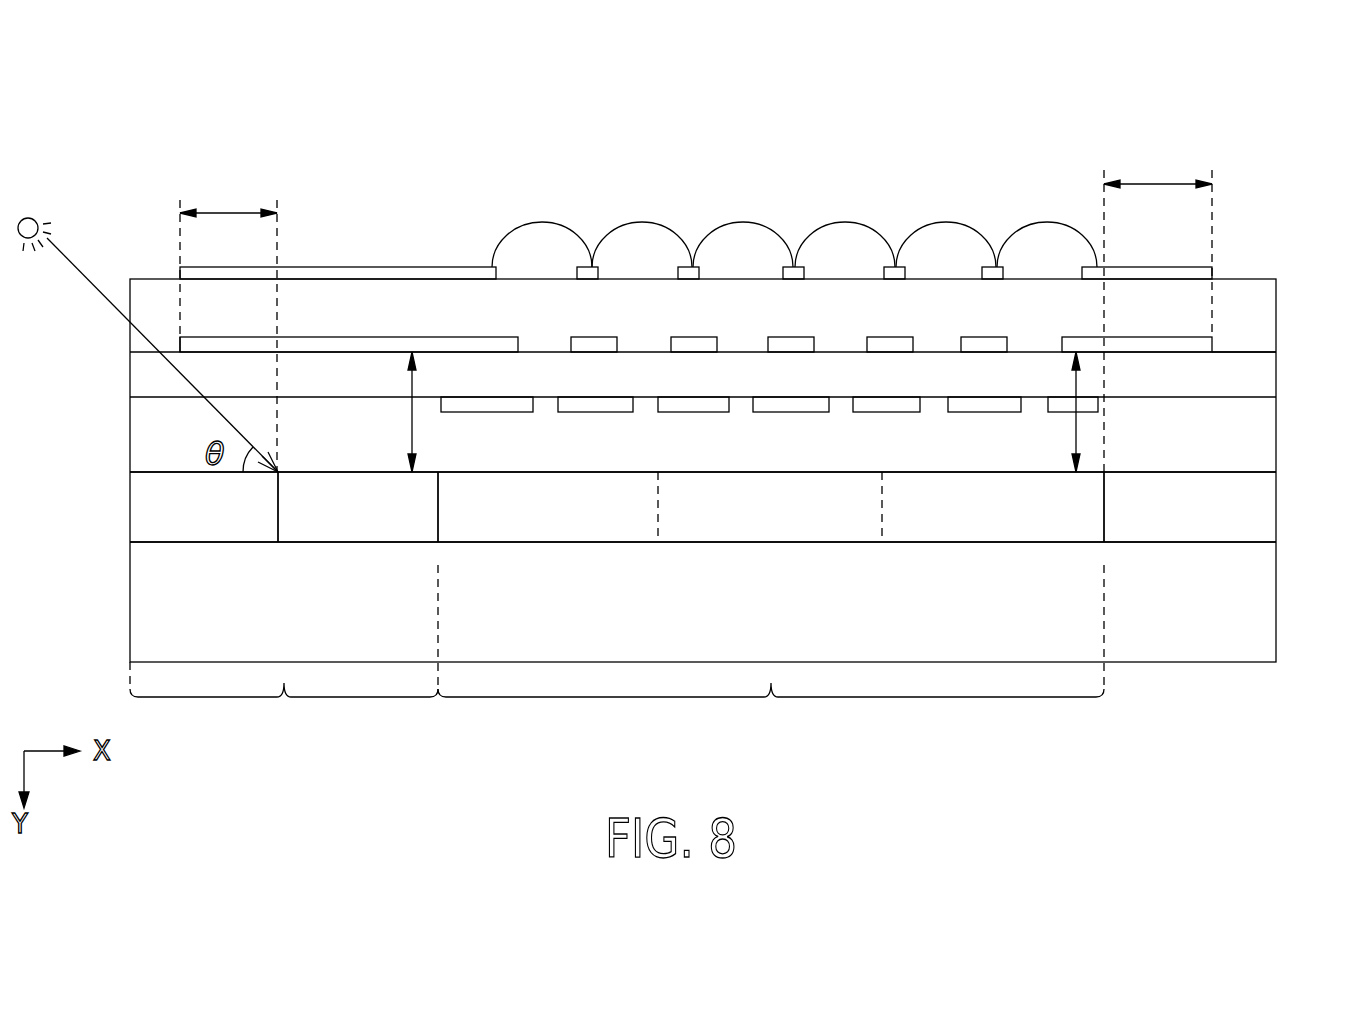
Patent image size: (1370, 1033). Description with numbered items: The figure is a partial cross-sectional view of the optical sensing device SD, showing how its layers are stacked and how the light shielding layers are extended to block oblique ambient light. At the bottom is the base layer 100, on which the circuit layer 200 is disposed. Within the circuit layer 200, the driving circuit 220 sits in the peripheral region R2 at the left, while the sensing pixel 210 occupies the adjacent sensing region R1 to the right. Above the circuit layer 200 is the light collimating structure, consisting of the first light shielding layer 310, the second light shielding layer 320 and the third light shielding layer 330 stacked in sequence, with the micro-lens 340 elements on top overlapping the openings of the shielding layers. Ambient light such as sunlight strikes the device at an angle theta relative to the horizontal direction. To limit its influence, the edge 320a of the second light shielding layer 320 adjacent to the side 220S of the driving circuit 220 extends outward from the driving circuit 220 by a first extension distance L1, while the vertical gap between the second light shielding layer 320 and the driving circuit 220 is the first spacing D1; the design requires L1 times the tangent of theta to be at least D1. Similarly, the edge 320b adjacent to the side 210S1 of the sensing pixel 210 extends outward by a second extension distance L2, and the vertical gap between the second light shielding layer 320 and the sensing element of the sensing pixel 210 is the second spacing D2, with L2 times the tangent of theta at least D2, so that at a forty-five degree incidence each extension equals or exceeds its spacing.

The optical sensing device SD is at (1180, 94).
The base layer 100 is at (1248, 607).
The circuit layer 200 is at (1248, 527).
The sensing pixel 210 is at (515, 513).
The driving circuit 220 is at (372, 513).
The side of the sensing pixel 210S1 is at (1104, 505).
The side of the driving circuit 220S is at (278, 505).
The first light shielding layer 310 is at (1090, 407).
The second light shielding layer 320 is at (1135, 340).
The edge of the second light shielding layer 320a is at (180, 343).
The edge of the second light shielding layer 320b is at (1212, 343).
The third light shielding layer 330 is at (1138, 268).
The micro-lens 340 is at (942, 238).
The first extension distance L1 is at (228, 326).
The second extension distance L2 is at (1158, 312).
The first spacing D1 is at (393, 412).
The second spacing D2 is at (1058, 412).
The sensing region R1 is at (771, 653).
The peripheral region R2 is at (284, 653).